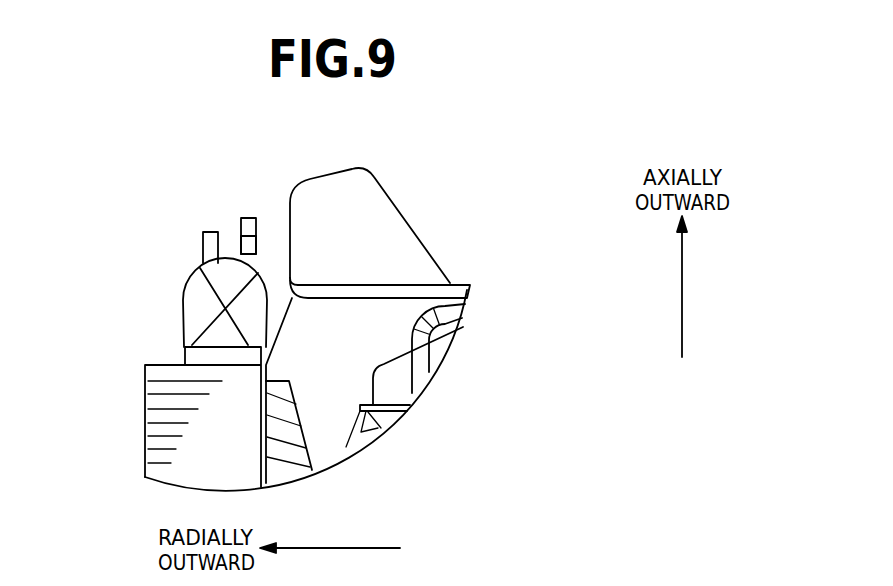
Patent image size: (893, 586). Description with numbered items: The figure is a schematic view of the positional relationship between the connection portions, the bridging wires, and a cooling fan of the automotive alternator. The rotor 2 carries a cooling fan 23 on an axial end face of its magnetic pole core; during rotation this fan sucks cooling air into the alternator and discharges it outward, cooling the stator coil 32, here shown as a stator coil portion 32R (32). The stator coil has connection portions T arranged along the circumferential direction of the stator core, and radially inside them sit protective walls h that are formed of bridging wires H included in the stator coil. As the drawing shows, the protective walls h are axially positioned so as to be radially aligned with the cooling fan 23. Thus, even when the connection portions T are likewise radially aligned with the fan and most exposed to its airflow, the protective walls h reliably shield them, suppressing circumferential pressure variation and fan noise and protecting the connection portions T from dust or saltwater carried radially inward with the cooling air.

The rotor 2 is at (444, 243).
The cooling fan 23 is at (377, 200).
The stator coil 32R is at (157, 289).
The stator coil 32 is at (193, 292).
The connection portion T is at (206, 233).
The bridging wire H is at (239, 184).
The protective wall h is at (256, 228).